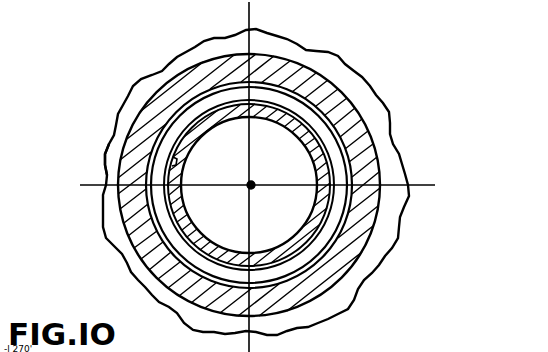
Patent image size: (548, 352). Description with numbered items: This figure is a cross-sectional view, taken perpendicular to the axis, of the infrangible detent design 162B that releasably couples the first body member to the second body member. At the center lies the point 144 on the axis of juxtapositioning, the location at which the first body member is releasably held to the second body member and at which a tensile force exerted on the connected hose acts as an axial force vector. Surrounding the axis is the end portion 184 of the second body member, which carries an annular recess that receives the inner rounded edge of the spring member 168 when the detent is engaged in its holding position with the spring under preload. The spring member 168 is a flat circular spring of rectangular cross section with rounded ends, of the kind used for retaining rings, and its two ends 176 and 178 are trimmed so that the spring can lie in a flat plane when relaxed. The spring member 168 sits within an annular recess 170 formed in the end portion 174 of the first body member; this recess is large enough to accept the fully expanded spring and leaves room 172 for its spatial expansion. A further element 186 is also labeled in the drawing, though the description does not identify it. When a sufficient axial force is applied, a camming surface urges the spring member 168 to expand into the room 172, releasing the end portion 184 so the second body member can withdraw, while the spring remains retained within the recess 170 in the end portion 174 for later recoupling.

The point 144 is at (256, 183).
The infrangible detent design 162B is at (387, 81).
The spring member 168 is at (302, 104).
The annular recess 170 is at (110, 171).
The room for spatial expansion 172 is at (152, 144).
The end portion of the first body member 174 is at (148, 114).
The end of the spring 176 is at (165, 86).
The end of the spring 178 is at (182, 110).
The end portion of the second body member 184 is at (128, 270).
The inner bushing 186 is at (110, 233).